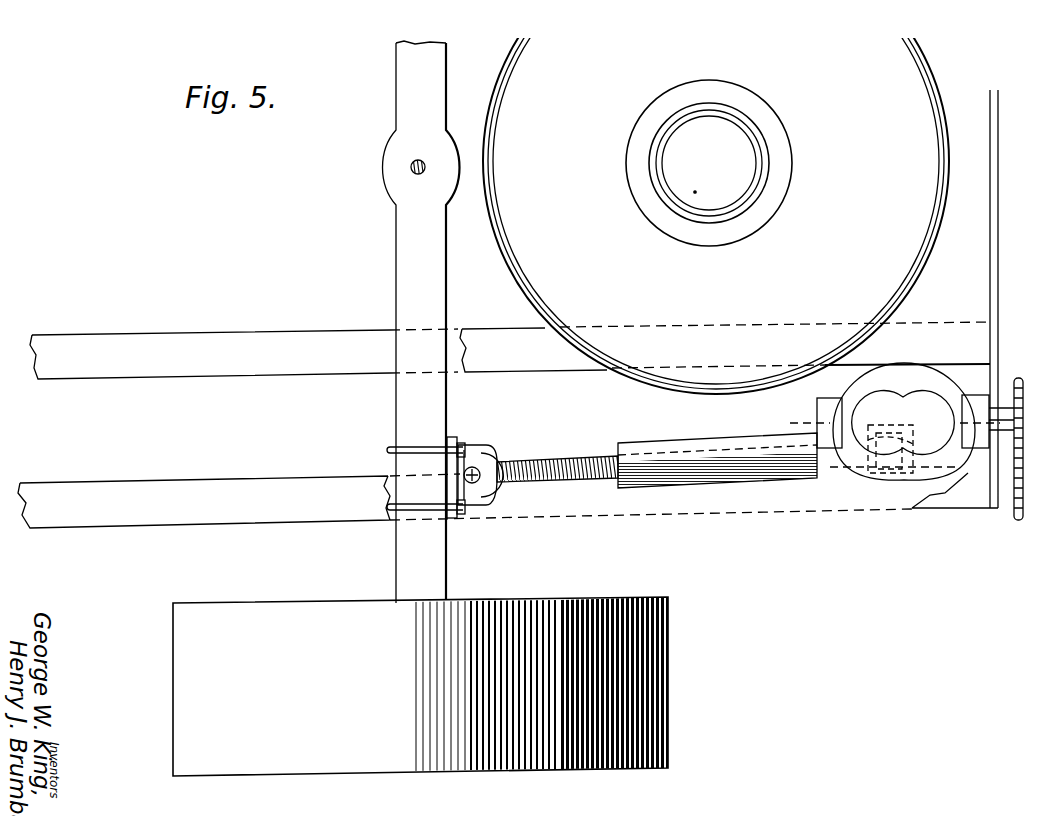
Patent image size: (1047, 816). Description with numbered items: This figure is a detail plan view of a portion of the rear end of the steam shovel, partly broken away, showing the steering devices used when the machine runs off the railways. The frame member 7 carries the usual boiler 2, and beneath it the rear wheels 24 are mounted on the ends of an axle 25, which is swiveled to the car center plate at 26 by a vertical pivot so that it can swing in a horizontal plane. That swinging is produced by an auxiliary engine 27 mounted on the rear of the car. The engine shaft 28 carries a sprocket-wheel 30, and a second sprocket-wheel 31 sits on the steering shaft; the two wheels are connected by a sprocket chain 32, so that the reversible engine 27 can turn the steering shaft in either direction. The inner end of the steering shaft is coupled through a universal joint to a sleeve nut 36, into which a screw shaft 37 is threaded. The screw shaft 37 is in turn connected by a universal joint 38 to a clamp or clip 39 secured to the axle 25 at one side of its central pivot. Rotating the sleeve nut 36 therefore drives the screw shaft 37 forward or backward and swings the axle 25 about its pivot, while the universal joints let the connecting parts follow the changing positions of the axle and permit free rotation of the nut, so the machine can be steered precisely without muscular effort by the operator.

The boiler 2 is at (532, 264).
The frame bars 7 is at (192, 346).
The rear wheels 24 is at (282, 612).
The axle 25 is at (396, 287).
The car center plate 26 is at (411, 172).
The auxiliary engine 27 is at (900, 381).
The engine shaft 28 is at (998, 417).
The sprocket-wheel 30 is at (1016, 382).
The sprocket-wheel 31 is at (1017, 521).
The sprocket chain 32 is at (1020, 434).
The sleeve nut 36 is at (762, 438).
The screw shaft 37 is at (570, 462).
The universal joint 38 is at (490, 447).
The clamp or clip 39 is at (418, 446).